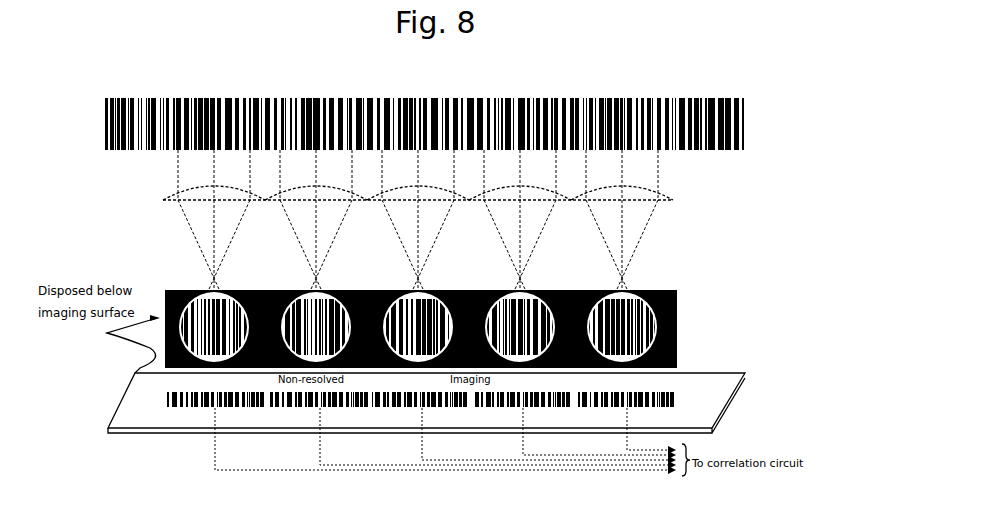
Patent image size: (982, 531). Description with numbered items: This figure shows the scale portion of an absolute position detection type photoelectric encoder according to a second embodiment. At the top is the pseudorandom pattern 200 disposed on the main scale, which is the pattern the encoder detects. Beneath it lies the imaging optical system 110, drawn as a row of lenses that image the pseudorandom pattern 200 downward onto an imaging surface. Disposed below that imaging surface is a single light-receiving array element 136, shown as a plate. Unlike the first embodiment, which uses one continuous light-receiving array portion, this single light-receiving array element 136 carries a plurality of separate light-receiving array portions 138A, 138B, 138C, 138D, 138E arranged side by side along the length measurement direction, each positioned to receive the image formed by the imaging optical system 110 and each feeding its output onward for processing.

The pseudorandom pattern 200 is at (105, 140).
The imaging optical system 110 is at (163, 200).
The light-receiving array element 136 is at (128, 432).
The light-receiving array portion 138A is at (162, 408).
The light-receiving array portion 138B is at (268, 408).
The light-receiving array portion 138C is at (372, 408).
The light-receiving array portion 138D is at (476, 408).
The light-receiving array portion 138E is at (580, 408).